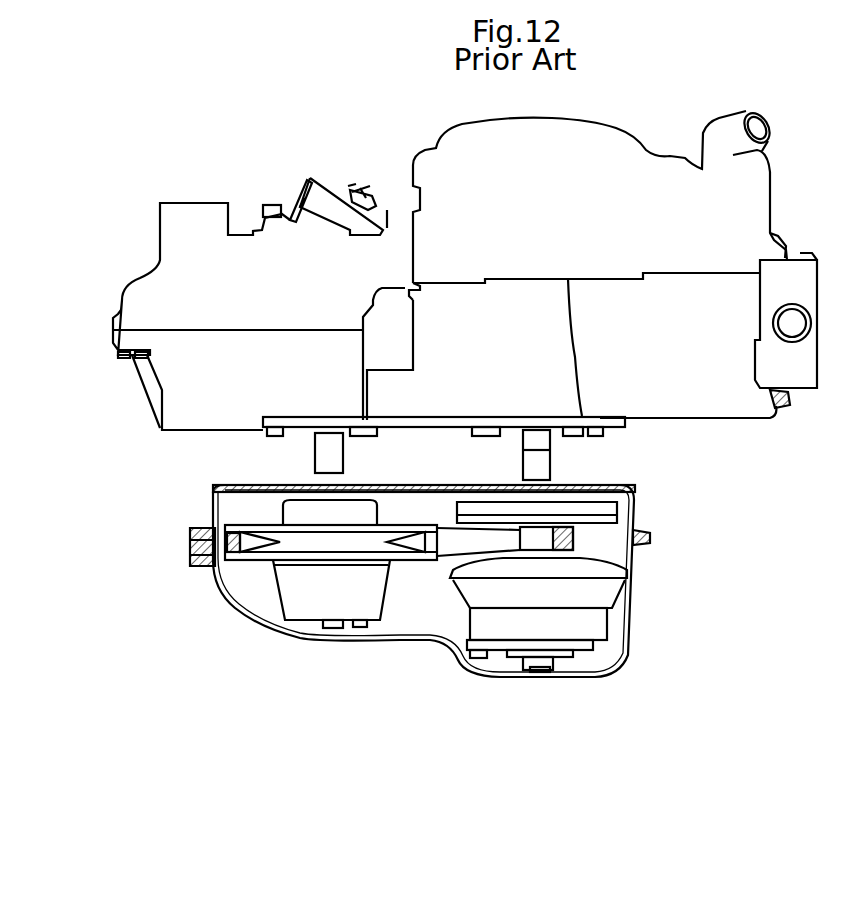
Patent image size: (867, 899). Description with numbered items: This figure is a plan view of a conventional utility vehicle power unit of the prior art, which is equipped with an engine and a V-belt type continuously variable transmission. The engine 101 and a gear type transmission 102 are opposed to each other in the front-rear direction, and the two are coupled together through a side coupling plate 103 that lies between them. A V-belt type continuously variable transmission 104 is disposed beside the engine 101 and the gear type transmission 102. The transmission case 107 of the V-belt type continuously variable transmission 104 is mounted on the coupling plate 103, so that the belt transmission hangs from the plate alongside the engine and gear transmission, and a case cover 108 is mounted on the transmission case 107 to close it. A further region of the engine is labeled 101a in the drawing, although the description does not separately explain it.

The engine 101 is at (668, 348).
The engine mounting surface 101a is at (400, 430).
The gear type transmission 102 is at (222, 391).
The side coupling plate 103 is at (620, 425).
The V-belt type continuously variable transmission 104 is at (336, 706).
The transmission case 107 is at (632, 513).
The case cover 108 is at (628, 617).